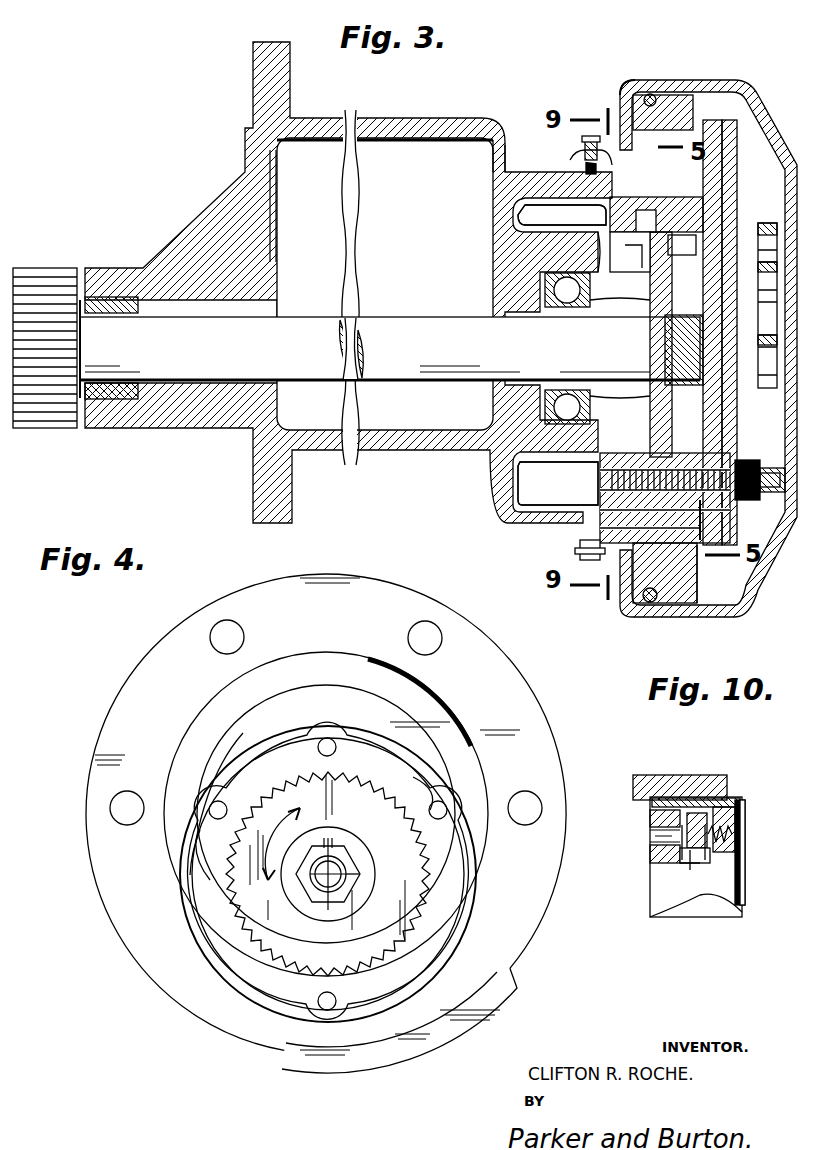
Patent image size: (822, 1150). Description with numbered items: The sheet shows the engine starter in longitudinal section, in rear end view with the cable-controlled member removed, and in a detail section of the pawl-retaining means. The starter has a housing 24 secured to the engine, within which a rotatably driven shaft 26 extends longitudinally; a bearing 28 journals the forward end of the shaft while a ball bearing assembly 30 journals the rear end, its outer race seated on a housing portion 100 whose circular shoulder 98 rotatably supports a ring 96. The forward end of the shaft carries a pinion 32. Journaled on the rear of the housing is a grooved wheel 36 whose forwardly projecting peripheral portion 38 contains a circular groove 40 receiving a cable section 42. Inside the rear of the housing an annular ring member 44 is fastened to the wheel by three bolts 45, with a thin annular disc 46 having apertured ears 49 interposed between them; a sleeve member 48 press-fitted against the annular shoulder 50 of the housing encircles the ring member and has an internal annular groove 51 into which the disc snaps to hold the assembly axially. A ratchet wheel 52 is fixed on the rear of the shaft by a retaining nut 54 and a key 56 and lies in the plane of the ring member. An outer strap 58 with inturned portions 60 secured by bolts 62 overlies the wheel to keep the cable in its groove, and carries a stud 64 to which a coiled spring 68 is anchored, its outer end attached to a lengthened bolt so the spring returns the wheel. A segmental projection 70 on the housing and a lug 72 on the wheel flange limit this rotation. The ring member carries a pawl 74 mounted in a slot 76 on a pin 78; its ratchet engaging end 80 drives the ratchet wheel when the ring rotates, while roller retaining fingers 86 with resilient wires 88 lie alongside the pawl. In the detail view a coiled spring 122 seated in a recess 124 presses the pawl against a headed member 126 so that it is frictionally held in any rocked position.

In FIG. 3, the housing 24 is at (250, 158).
In FIG. 4, the housing 24 is at (400, 695).
In FIG. 3, the driven shaft 26 is at (404, 320).
In FIG. 3, the bearing 28 is at (103, 297).
In FIG. 3, the ball bearing assembly 30 is at (520, 290).
In FIG. 3, the pinion 32 is at (45, 268).
In FIG. 3, the grooved wheel 36 is at (732, 200).
In FIG. 3, the peripheral portion 38 is at (690, 120).
In FIG. 3, the circular groove 40 is at (645, 92).
In FIG. 3, the cable section 42 is at (652, 92).
In FIG. 3, the ring member 44 is at (578, 540).
In FIG. 10, the ring member 44 is at (690, 905).
In FIG. 3, the bolts 45 is at (700, 505).
In FIG. 3, the annular disc 46 is at (668, 452).
In FIG. 4, the annular disc 46 is at (190, 880).
In FIG. 10, the annular disc 46 is at (745, 812).
In FIG. 3, the sleeve member 48 is at (700, 210).
In FIG. 4, the sleeve member 48 is at (300, 1025).
In FIG. 10, the sleeve member 48 is at (735, 810).
In FIG. 4, the apertured ears 49 is at (412, 805).
In FIG. 3, the annular shoulder 50 is at (590, 162).
In FIG. 3, the internal annular groove 51 is at (670, 600).
In FIG. 3, the ratchet wheel 52 is at (612, 470).
In FIG. 4, the ratchet wheel 52 is at (278, 925).
In FIG. 3, the retaining nut 54 is at (690, 335).
In FIG. 4, the retaining nut 54 is at (345, 860).
In FIG. 3, the key 56 is at (620, 322).
In FIG. 3, the strap 58 is at (748, 88).
In FIG. 3, the inturned portions 60 is at (620, 92).
In FIG. 3, the bolts 62 is at (585, 140).
In FIG. 3, the stud 64 is at (760, 400).
In FIG. 3, the coiled spring 68 is at (768, 222).
In FIG. 3, the segmental projection 70 is at (685, 612).
In FIG. 4, the segmental projection 70 is at (500, 1010).
In FIG. 3, the lug 72 is at (700, 545).
In FIG. 10, the pawl 74 is at (700, 815).
In FIG. 3, the slot 76 is at (620, 250).
In FIG. 10, the slot 76 is at (672, 870).
In FIG. 3, the pin 78 is at (580, 214).
In FIG. 4, the ratchet engaging end 80 is at (362, 860).
In FIG. 10, the ratchet engaging end 80 is at (700, 870).
In FIG. 3, the roller retaining fingers 86 is at (636, 215).
In FIG. 10, the resilient wires 88 is at (686, 800).
In FIG. 3, the ring 96 is at (586, 166).
In FIG. 3, the circular shoulder 98 is at (575, 466).
In FIG. 3, the housing portion 100 is at (598, 252).
In FIG. 10, the coiled spring 122 is at (735, 834).
In FIG. 10, the recess 124 is at (745, 862).
In FIG. 10, the headed member 126 is at (650, 836).